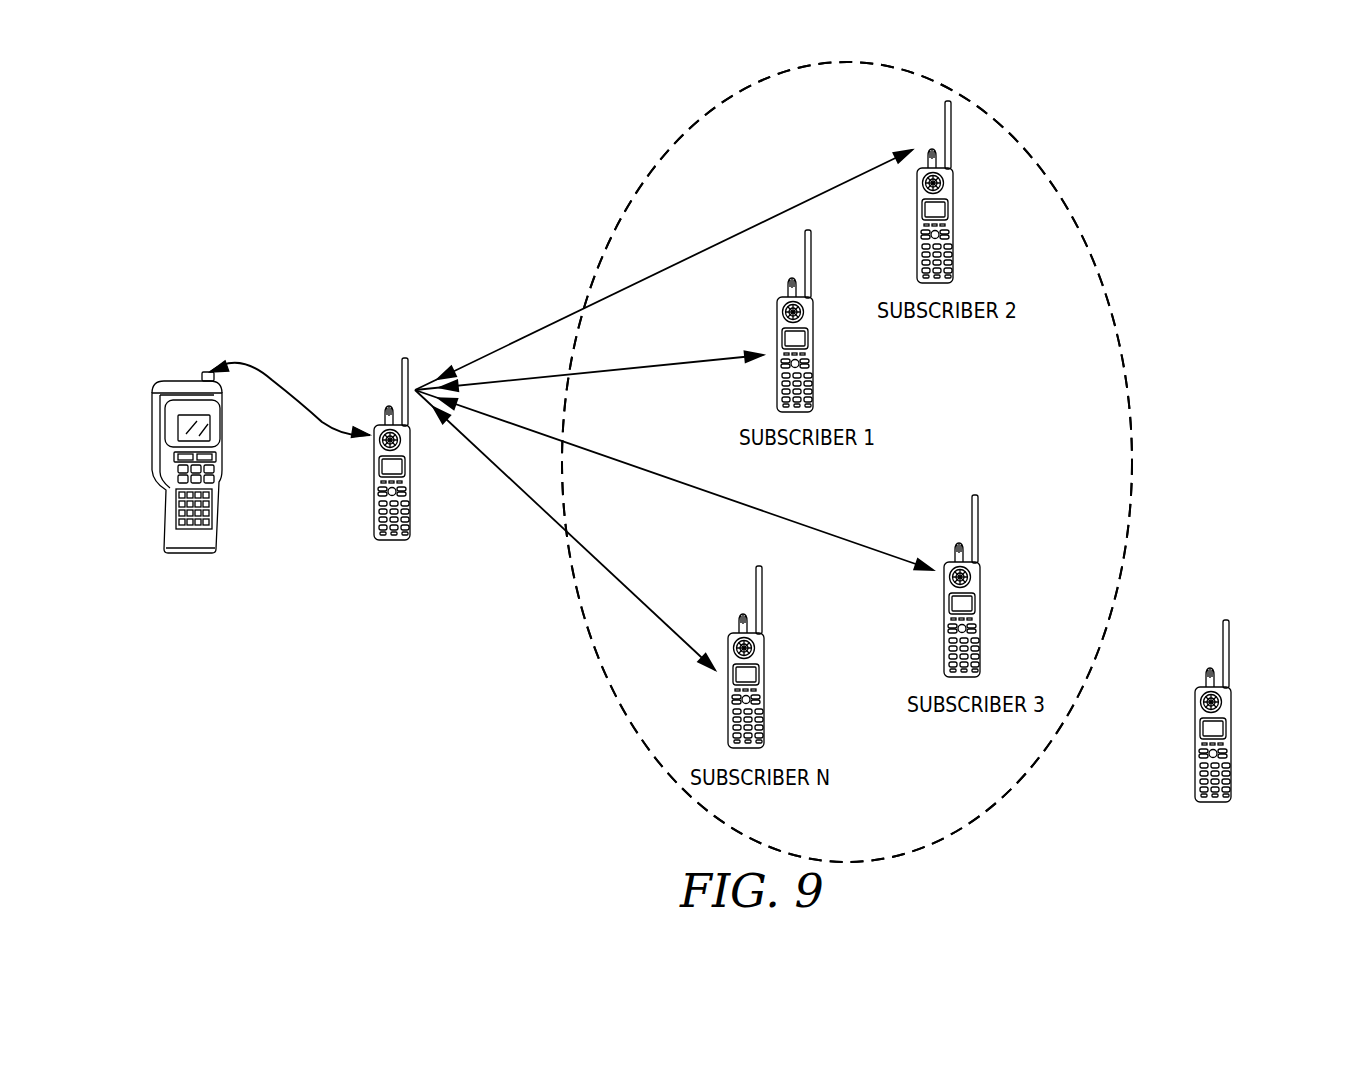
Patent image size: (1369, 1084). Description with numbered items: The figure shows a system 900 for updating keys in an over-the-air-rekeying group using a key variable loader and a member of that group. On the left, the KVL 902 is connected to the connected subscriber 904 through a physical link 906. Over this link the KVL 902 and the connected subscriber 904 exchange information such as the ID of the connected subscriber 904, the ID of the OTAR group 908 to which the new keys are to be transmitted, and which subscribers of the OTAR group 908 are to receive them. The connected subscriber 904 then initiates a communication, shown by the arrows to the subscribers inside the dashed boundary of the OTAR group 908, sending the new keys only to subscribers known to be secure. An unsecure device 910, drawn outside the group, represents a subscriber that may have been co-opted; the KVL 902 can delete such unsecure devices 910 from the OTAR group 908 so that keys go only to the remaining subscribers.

The system 900 is at (1258, 108).
The KVL 902 is at (196, 553).
The connected subscriber 904 is at (395, 540).
The physical link 906 is at (291, 398).
The OTAR group 908 is at (826, 116).
The unsecure devices 910 is at (1232, 715).